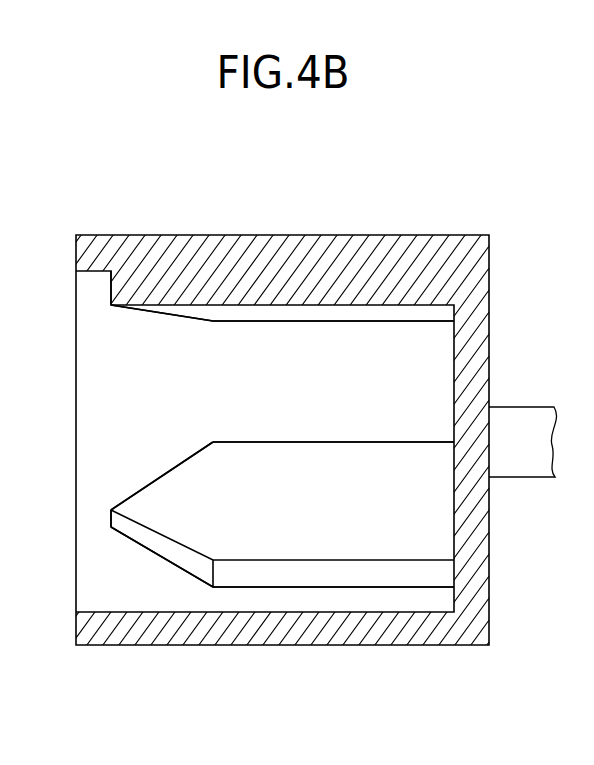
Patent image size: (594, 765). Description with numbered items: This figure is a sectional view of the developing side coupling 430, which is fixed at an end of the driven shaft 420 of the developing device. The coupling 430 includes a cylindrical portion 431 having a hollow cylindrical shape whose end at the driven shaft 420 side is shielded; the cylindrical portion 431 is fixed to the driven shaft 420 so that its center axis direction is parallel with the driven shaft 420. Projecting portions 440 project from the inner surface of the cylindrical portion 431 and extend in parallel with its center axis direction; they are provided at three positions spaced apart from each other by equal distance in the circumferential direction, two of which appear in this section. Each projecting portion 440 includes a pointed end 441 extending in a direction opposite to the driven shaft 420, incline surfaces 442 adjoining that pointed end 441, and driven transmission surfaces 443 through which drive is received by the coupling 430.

The driven shaft 420 is at (516, 417).
The developing side coupling 430 is at (55, 198).
The cylindrical portion 431 is at (382, 231).
The projecting portion 440 is at (345, 315).
The pointed end 441 is at (111, 286).
The incline surface 442 is at (164, 307).
The driven transmission surface 443 is at (282, 323).